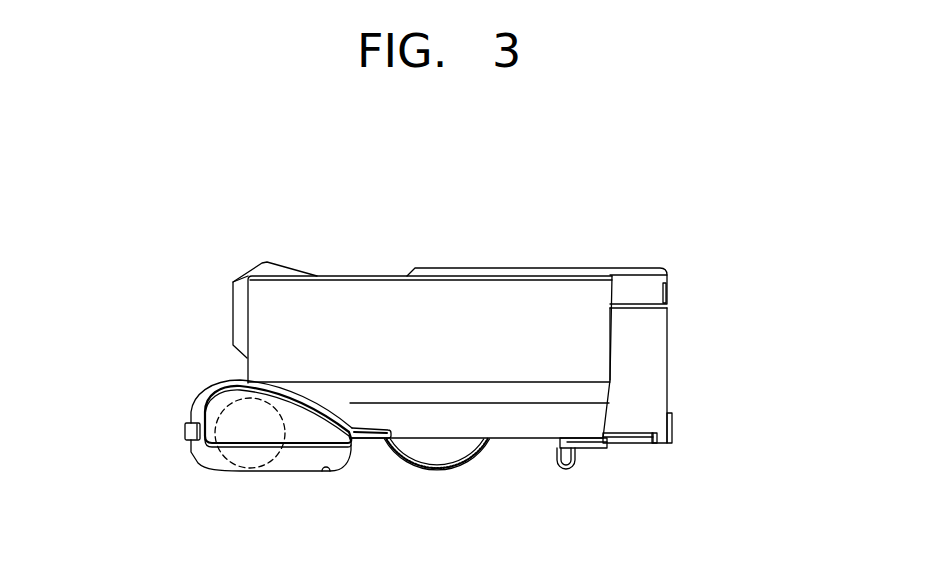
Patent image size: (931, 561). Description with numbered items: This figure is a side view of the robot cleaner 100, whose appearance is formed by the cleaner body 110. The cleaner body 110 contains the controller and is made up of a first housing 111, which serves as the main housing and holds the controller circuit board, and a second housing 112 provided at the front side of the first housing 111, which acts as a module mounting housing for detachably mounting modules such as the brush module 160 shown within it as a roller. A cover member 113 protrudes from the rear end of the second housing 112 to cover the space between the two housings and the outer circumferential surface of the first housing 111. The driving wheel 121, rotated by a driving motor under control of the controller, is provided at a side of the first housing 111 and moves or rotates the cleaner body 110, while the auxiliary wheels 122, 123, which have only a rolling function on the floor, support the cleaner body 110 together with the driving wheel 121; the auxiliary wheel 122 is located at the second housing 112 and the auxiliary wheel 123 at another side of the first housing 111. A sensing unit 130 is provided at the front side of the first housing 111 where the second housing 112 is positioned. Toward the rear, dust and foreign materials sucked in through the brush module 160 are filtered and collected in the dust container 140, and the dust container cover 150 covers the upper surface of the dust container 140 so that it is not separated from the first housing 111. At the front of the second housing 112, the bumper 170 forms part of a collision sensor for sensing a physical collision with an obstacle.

The robot cleaner 100 is at (264, 177).
The cleaner body 110 is at (404, 192).
The first housing 111 is at (391, 303).
The second housing 112 is at (310, 455).
The cover member 113 is at (377, 440).
The driving wheel 121 is at (437, 457).
The auxiliary wheel 122 is at (327, 472).
The auxiliary wheel 123 is at (566, 470).
The sensing unit 130 is at (260, 265).
The dust container 140 is at (657, 358).
The dust container cover 150 is at (657, 293).
The brush module 160 is at (282, 455).
The bumper 170 is at (186, 433).